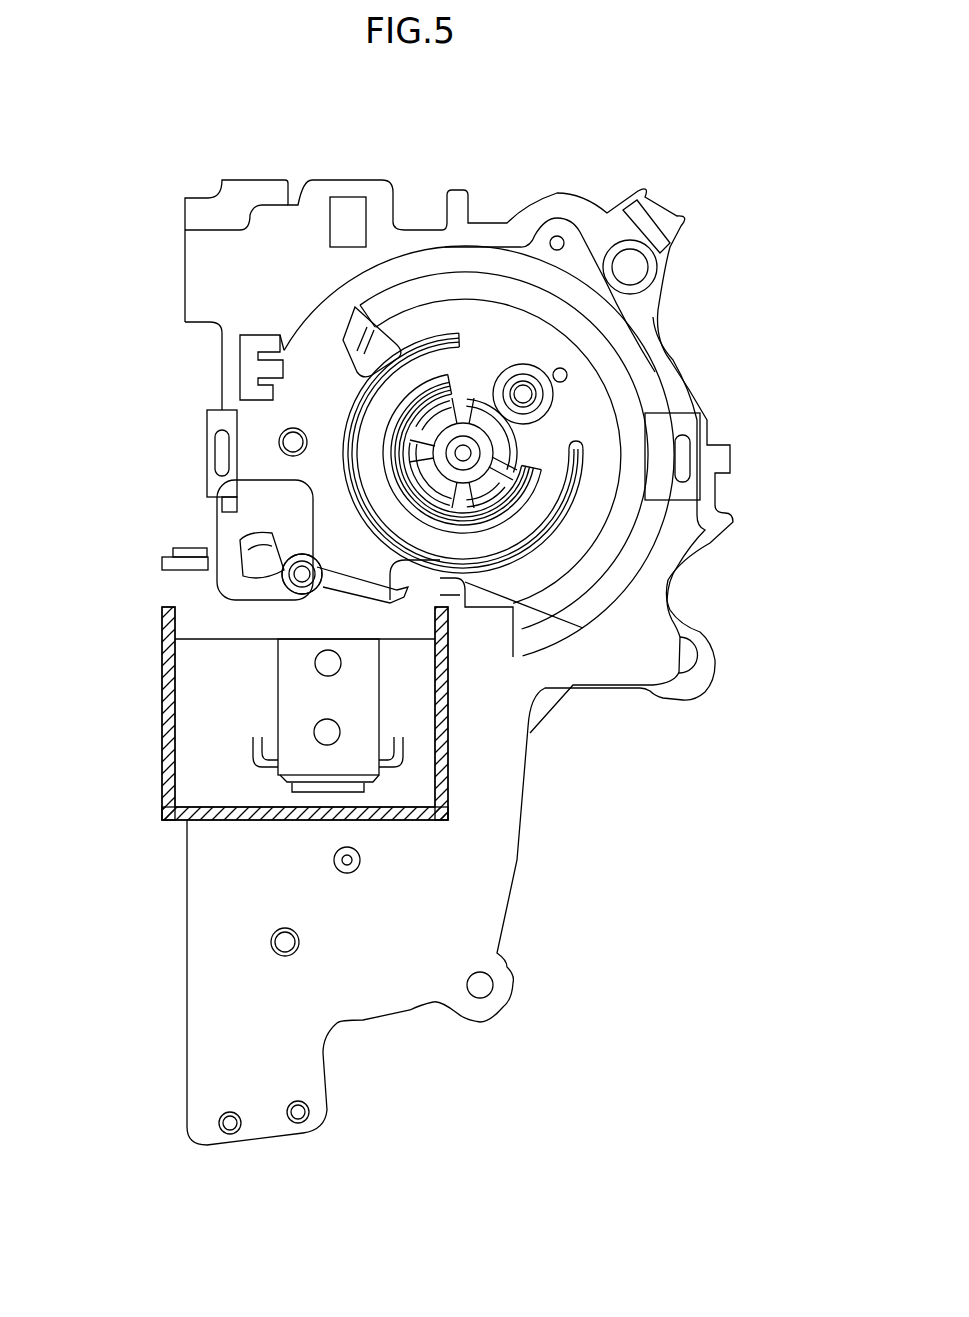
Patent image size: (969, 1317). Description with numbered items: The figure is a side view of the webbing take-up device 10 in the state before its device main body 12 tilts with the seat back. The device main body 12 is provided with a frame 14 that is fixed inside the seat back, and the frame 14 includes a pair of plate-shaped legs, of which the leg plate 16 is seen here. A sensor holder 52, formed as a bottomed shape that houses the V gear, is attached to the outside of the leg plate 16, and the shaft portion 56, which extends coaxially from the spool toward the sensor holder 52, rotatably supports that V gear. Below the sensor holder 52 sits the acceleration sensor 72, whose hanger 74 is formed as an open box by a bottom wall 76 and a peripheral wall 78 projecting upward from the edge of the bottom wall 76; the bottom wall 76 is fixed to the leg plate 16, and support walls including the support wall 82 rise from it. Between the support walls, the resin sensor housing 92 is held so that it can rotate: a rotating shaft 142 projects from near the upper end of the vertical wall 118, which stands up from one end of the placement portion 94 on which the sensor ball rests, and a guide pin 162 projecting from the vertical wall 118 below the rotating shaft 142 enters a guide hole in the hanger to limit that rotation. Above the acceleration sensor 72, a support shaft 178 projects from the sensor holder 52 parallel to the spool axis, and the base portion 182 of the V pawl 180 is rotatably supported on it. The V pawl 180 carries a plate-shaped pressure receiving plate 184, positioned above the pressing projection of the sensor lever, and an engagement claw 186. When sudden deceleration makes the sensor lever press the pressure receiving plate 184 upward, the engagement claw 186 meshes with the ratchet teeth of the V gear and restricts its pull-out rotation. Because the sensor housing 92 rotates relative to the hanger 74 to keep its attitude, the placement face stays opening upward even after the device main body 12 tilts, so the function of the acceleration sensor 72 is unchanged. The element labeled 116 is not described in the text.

The webbing take-up device 10 is at (712, 194).
The device main body 12 is at (143, 1030).
The frame 14 is at (420, 1018).
The leg plate 16 is at (362, 1002).
The sensor holder 52 is at (623, 363).
The shaft portion 56 is at (493, 443).
The acceleration sensor 72 is at (135, 636).
The hanger 74 is at (480, 736).
The bottom wall 76 is at (215, 822).
The peripheral wall 78 is at (460, 768).
The support wall 82 is at (413, 795).
The sensor housing 92 is at (412, 688).
The placement portion 94 is at (308, 793).
The battery unit 116 is at (250, 710).
The vertical wall 118 is at (293, 717).
The rotating shaft 142 is at (318, 663).
The guide pin 162 is at (335, 735).
The support shaft 178 is at (228, 553).
The V pawl 180 is at (278, 532).
The base portion 182 is at (303, 556).
The pressure receiving plate 184 is at (445, 642).
The engagement claw 186 is at (583, 628).